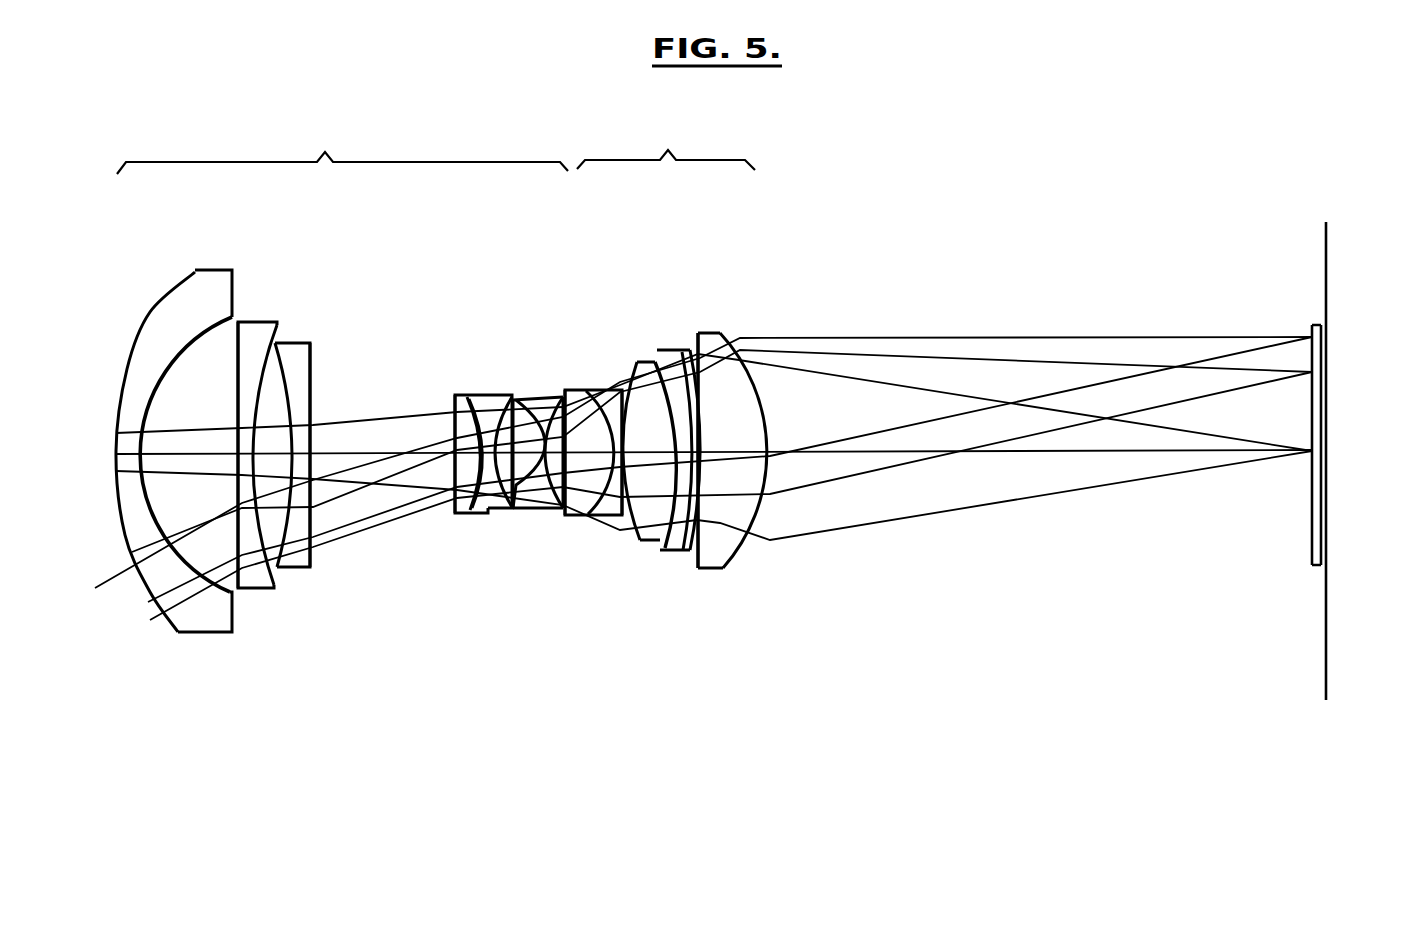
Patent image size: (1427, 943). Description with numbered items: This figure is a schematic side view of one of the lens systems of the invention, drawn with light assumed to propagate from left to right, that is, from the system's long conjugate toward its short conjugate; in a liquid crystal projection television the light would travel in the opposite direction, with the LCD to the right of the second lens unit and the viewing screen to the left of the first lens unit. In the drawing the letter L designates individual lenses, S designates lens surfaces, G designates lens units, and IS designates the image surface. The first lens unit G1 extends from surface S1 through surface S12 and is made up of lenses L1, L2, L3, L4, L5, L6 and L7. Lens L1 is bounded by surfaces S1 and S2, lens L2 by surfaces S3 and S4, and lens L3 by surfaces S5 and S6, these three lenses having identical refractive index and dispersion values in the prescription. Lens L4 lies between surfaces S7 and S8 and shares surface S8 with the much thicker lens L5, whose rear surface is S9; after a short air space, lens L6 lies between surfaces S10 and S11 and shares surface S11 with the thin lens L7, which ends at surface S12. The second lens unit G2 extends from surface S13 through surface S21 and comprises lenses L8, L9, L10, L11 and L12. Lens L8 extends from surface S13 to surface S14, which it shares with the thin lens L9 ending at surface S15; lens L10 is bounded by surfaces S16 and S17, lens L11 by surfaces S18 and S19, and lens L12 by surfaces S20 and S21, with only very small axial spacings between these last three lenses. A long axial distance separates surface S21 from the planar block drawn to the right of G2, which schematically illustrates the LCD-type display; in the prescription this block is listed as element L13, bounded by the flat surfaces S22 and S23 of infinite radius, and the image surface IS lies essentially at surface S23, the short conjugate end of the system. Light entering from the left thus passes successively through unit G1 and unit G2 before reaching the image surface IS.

The first lens unit G1 is at (342, 147).
The second lens unit G2 is at (666, 145).
The lens L1 is at (143, 453).
The lens L2 is at (243, 407).
The lens L3 is at (309, 459).
The lens L4 is at (430, 469).
The lens L5 is at (440, 449).
The lens L6 is at (523, 429).
The lens L7 is at (584, 390).
The lens L8 is at (555, 512).
The lens L9 is at (640, 433).
The lens L10 is at (637, 507).
The lens L11 is at (724, 446).
The lens L12 is at (765, 455).
The planar block L13 is at (1304, 488).
The lens surface S1 is at (142, 571).
The lens surface S2 is at (177, 600).
The lens surface S3 is at (237, 395).
The lens surface S4 is at (277, 338).
The lens surface S5 is at (252, 590).
The lens surface S6 is at (312, 552).
The lens surface S7 is at (450, 512).
The lens surface S8 is at (455, 512).
The lens surface S9 is at (480, 397).
The lens surface S10 is at (517, 512).
The lens surface S11 is at (540, 398).
The lens surface S12 is at (538, 512).
The lens surface S13 is at (582, 398).
The lens surface S14 is at (567, 513).
The lens surface S15 is at (653, 362).
The lens surface S16 is at (643, 545).
The lens surface S17 is at (672, 552).
The lens surface S18 is at (703, 352).
The lens surface S19 is at (688, 552).
The lens surface S20 is at (740, 555).
The lens surface S21 is at (753, 527).
The lens surface S22 is at (1310, 533).
The lens surface S23 is at (1328, 533).
The image surface IS is at (1328, 640).